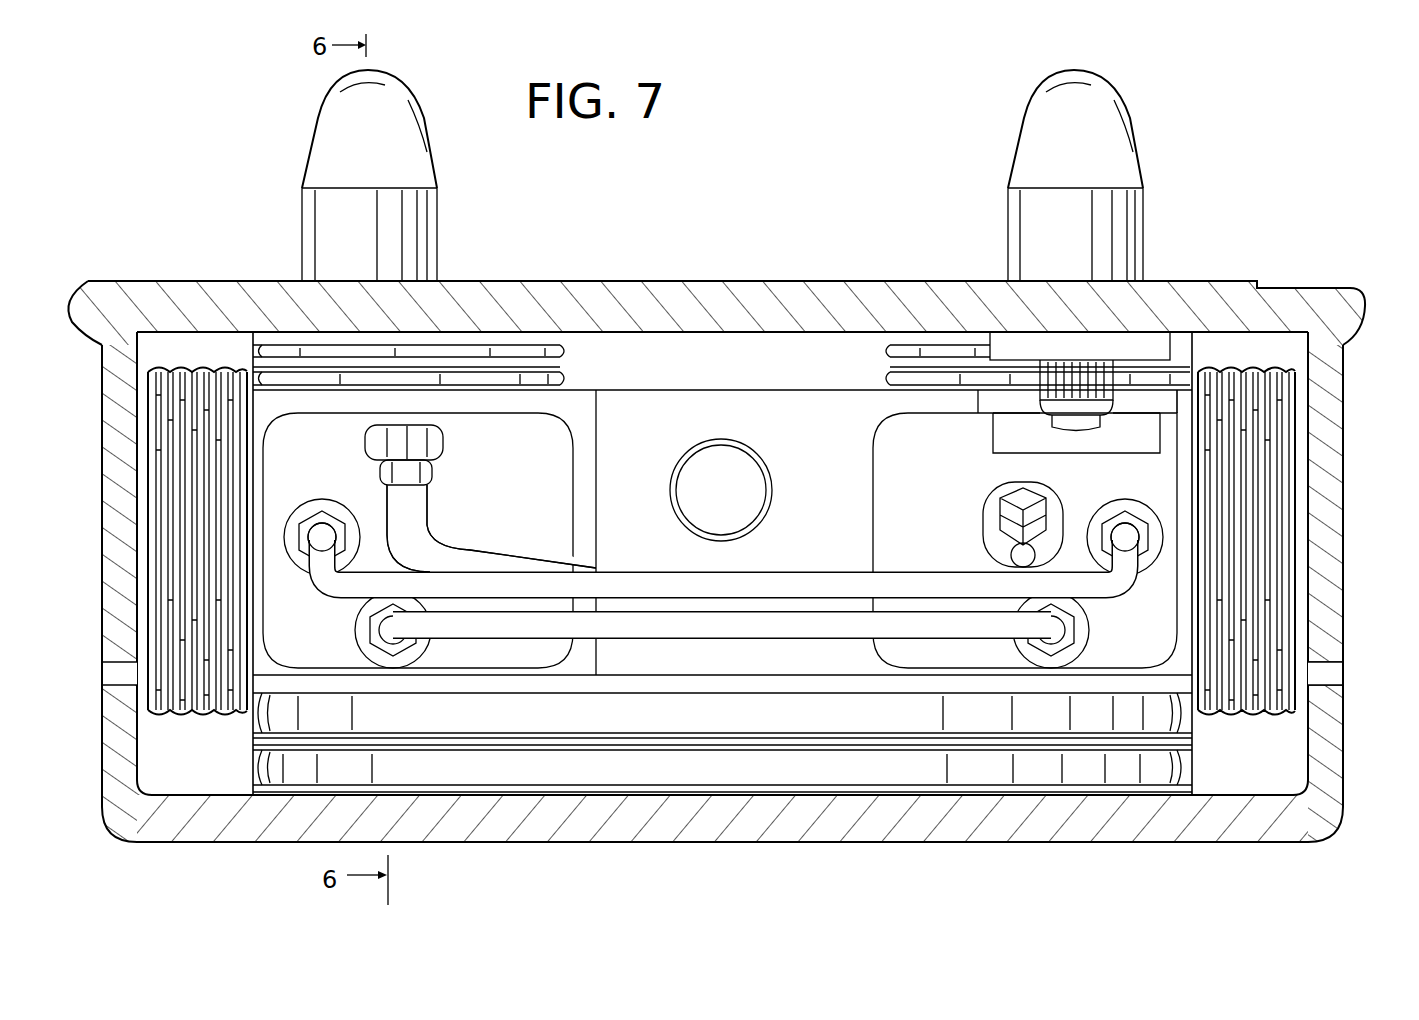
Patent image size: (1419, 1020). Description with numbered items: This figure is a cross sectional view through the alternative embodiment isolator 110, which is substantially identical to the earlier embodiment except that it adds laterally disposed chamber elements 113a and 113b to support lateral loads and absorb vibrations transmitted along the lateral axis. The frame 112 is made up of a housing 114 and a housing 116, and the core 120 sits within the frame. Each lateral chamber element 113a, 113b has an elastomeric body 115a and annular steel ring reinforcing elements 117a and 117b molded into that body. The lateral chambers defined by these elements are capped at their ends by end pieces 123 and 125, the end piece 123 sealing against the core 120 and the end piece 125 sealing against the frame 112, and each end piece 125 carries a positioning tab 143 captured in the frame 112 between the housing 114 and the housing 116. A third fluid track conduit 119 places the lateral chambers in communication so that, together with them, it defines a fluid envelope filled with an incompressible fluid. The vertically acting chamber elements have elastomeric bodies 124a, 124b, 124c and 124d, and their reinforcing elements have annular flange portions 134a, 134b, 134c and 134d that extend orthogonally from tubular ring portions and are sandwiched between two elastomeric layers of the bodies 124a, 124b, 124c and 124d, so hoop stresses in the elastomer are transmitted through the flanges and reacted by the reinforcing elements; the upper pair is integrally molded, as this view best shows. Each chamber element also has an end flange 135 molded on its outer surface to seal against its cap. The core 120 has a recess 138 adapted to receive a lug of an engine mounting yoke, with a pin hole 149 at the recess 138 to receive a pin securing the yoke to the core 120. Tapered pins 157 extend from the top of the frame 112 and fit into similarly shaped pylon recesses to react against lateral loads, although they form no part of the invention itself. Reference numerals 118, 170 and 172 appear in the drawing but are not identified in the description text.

The alternative embodiment isolator 110 is at (134, 190).
The frame 112 is at (673, 272).
The lateral chamber element 113a is at (1285, 358).
The lateral chamber element 113b is at (160, 358).
The housing 114 is at (1060, 842).
The elastomeric body 115a is at (225, 716).
The housing 116 is at (1213, 293).
The annular steel ring reinforcing elements 117a is at (1270, 366).
The annular steel ring reinforcing elements 117b is at (240, 368).
The inner frame 118 is at (740, 372).
The third fluid track conduit 119 is at (838, 582).
The core 120 is at (836, 388).
The end piece 123 is at (235, 332).
The elastomeric body 124a is at (300, 712).
The elastomeric body 124b is at (1128, 722).
The elastomeric body 124c is at (525, 360).
The elastomeric body 124d is at (940, 350).
The end piece 125 is at (145, 540).
The annular flange portion 134a is at (446, 738).
The annular flange portion 134b is at (925, 738).
The annular flange portion 134c is at (558, 354).
The annular flange portion 134d is at (882, 355).
The end flange 135 is at (432, 790).
The recess 138 is at (600, 456).
The positioning tab 143 is at (115, 678).
The pin hole 149 is at (748, 478).
The tapered pins 157 is at (312, 146).
The lower tube 170 is at (806, 628).
The elbow pipe 172 is at (477, 560).